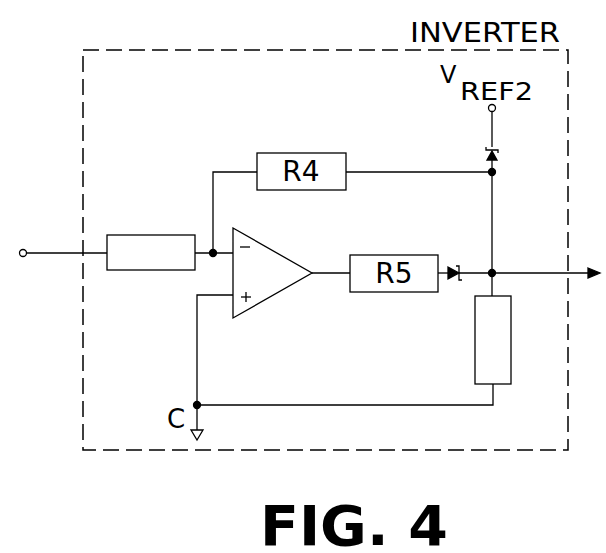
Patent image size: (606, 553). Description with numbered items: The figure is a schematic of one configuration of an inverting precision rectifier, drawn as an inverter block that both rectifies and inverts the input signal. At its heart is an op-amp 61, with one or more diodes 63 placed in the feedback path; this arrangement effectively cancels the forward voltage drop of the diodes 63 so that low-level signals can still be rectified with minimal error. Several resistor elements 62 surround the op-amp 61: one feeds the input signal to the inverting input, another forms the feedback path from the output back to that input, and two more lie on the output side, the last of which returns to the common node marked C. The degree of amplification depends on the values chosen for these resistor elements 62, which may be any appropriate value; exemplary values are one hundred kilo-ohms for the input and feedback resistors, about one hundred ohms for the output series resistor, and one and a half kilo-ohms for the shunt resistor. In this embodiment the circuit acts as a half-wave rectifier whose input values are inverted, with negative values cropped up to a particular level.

The op-amp 61 is at (293, 287).
The resistor element 62 is at (160, 272).
The diode 63 is at (500, 158).